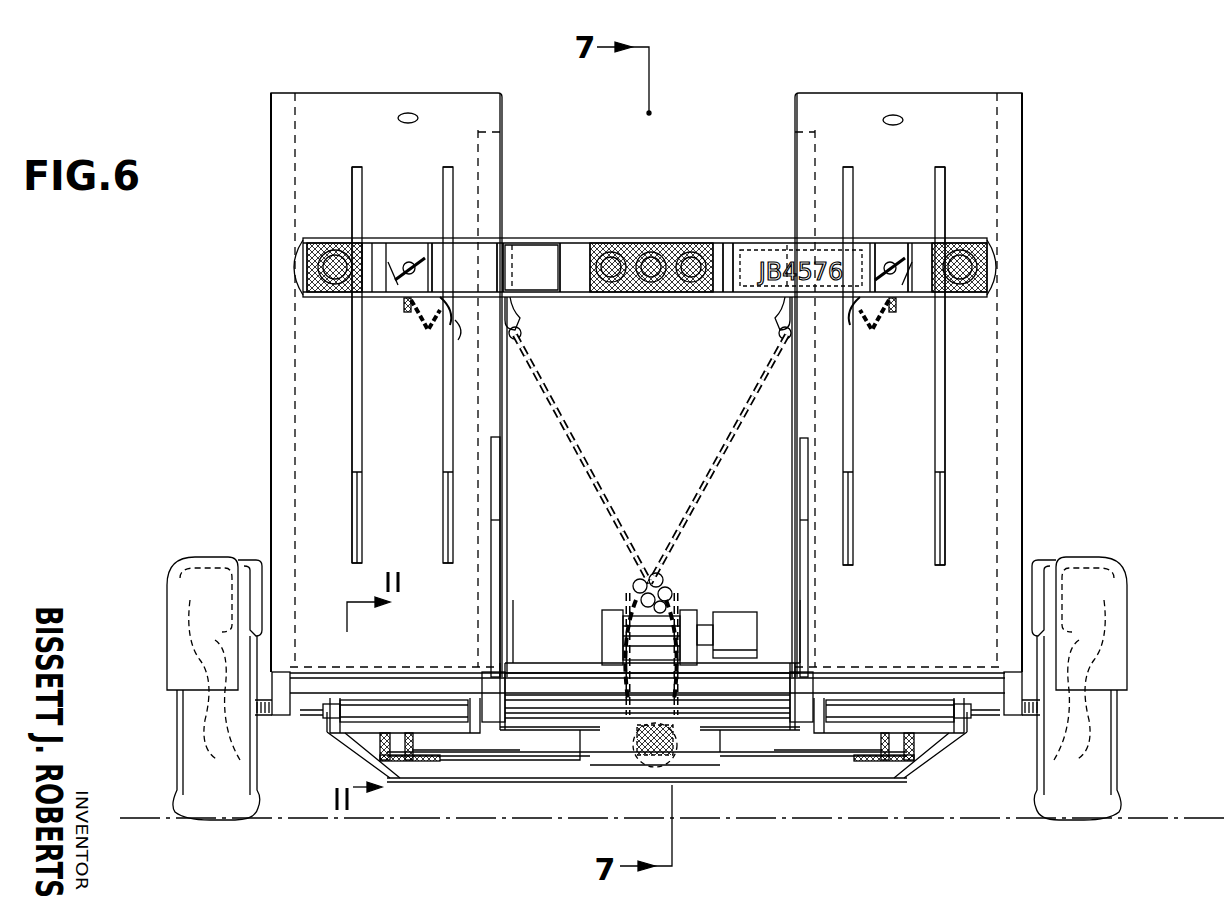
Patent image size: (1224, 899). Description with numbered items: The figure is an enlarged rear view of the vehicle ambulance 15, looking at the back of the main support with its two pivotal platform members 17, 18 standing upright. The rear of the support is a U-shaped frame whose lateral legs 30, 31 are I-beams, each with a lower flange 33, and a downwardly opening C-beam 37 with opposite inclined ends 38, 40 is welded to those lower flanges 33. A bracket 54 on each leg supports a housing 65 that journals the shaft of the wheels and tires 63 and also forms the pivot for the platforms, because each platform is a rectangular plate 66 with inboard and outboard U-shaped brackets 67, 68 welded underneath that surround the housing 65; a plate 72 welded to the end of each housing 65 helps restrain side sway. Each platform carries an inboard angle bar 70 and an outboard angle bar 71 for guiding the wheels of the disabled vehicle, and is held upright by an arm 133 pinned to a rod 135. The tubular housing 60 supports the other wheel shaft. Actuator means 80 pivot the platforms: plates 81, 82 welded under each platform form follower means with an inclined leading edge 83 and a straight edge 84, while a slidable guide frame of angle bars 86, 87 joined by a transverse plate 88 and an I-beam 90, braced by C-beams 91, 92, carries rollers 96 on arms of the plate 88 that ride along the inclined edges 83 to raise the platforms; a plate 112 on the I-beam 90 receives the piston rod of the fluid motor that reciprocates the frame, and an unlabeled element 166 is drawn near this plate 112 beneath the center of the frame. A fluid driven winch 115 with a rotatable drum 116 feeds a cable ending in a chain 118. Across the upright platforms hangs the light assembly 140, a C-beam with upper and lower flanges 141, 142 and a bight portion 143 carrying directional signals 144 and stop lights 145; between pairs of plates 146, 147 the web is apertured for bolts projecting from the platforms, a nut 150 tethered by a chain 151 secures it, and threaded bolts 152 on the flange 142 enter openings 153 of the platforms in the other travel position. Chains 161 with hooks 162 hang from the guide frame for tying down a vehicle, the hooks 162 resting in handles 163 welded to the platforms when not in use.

The vehicle ambulance 15 is at (1040, 217).
The platform member 17 is at (262, 200).
The platform member 18 is at (1025, 182).
The leg 30 is at (900, 792).
The leg 31 is at (440, 780).
The lower flange 33 is at (425, 780).
The downwardly opening C-beam 37 is at (765, 780).
The inclined end 38 is at (325, 735).
The inclined end 40 is at (955, 745).
The bracket 54 is at (305, 712).
The tubular housing 60 is at (570, 687).
The wheels and tires 63 is at (190, 773).
The housing 65 is at (395, 683).
The metallic rectangular plate 66 is at (395, 492).
The inboard U-shaped bracket 67 is at (478, 672).
The outboard U-shaped bracket 68 is at (290, 665).
The inboard angle bar 70 is at (492, 156).
The outboard angle bar 71 is at (278, 148).
The plate 72 is at (523, 690).
The actuator means 80 is at (290, 802).
The plate 81 is at (443, 400).
The plate 82 is at (352, 418).
The inclined leading edge 83 is at (365, 540).
The straight edge 84 is at (440, 355).
The lateral angle bar 86 is at (380, 780).
The laterally inboard angle bar 87 is at (432, 757).
The transverse plate 88 is at (548, 740).
The I-beam 90 is at (600, 762).
The C-beam 91 is at (722, 762).
The C-beam 92 is at (545, 770).
The roller 96 is at (355, 703).
The plate 112 is at (660, 770).
The fluid driven winch 115 is at (730, 625).
The rotatable drum 116 is at (605, 627).
The chain 118 is at (683, 588).
The arm 133 is at (505, 440).
The rod 135 is at (512, 255).
The light assembly 140 is at (697, 233).
The upper flange 141 is at (575, 232).
The lower flange 142 is at (603, 298).
The bight portion 143 is at (537, 270).
The directional signals 144 is at (300, 292).
The stop lights 145 is at (655, 282).
The plate 146 is at (400, 306).
The plate 147 is at (446, 275).
The nut 150 is at (420, 253).
The chain 151 is at (455, 325).
The threaded bolt 152 is at (410, 330).
The opening 153 is at (408, 113).
The chain 161 is at (607, 490).
The hook 162 is at (520, 345).
The handle 163 is at (518, 320).
The hitch ball 166 is at (695, 750).